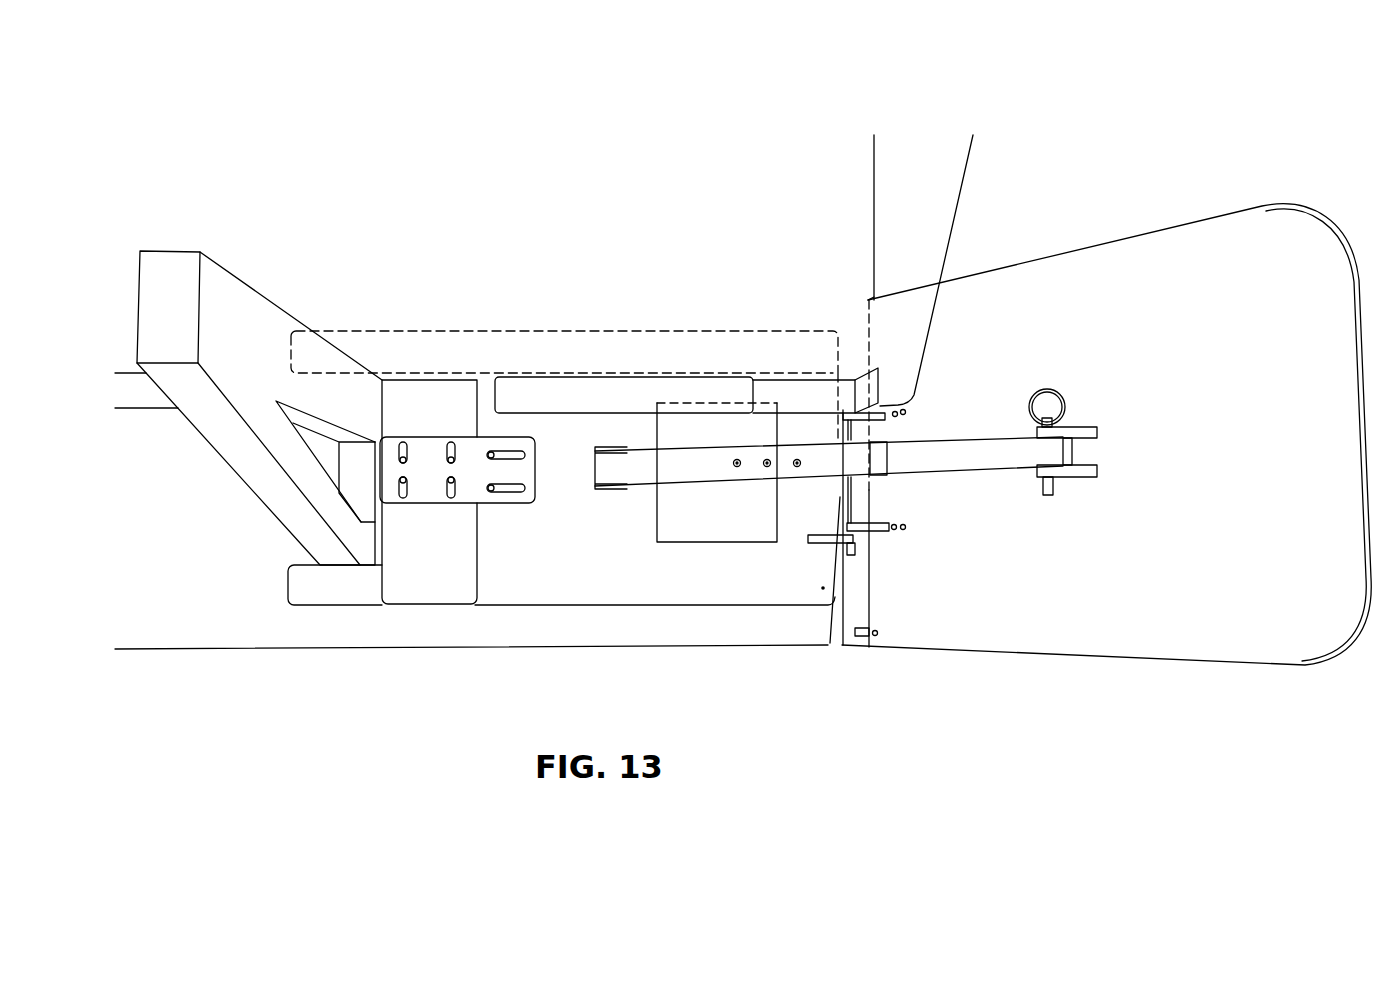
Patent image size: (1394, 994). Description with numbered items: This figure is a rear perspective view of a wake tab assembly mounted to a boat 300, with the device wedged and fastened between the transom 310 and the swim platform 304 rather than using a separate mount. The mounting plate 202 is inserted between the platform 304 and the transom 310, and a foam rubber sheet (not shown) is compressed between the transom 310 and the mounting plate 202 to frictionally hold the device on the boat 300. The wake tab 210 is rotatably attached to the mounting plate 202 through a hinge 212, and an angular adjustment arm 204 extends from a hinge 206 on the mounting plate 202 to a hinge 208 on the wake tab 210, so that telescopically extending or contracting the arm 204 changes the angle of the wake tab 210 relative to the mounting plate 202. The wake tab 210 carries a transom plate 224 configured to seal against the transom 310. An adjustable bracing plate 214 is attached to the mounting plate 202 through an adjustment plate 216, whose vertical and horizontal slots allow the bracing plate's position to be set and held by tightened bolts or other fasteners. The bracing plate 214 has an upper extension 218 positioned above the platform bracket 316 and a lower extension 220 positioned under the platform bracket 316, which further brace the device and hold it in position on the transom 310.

The mounting plate 202 is at (728, 593).
The angular adjustment arm 204 is at (930, 462).
The hinge 206 is at (608, 488).
The hinge 208 is at (1060, 483).
The wake tab 210 is at (1241, 296).
The hinge 212 is at (857, 550).
The adjustable bracing plate 214 is at (429, 492).
The adjustment plate 216 is at (488, 505).
The upper extension 218 is at (345, 332).
The lower extension 220 is at (310, 598).
The transom plate 224 is at (853, 643).
The boat 300 is at (958, 185).
The swim platform 304 is at (874, 155).
The transom 310 is at (143, 527).
The platform bracket 316 is at (227, 462).